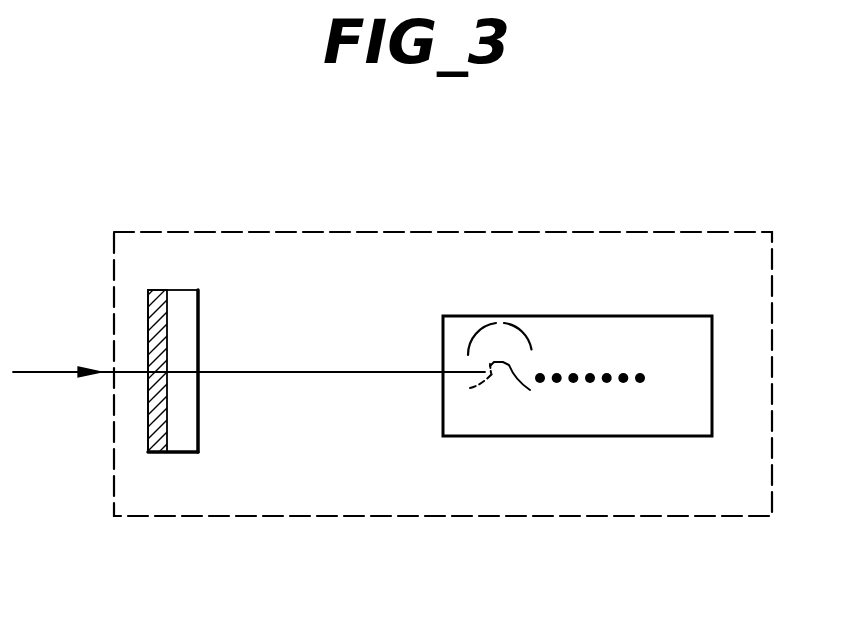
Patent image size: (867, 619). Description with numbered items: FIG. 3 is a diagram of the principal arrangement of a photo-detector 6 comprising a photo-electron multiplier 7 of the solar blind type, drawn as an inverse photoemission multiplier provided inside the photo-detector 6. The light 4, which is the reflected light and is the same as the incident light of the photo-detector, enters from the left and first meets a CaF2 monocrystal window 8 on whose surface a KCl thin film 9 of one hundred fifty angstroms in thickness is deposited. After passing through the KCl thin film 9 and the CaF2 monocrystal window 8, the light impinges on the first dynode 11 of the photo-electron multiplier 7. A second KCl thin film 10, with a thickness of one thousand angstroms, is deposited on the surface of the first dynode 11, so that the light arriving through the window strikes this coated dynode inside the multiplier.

The reflected light 4 is at (40, 372).
The photo-detector 6 is at (483, 232).
The photo-electron multiplier 7 is at (712, 372).
The CaF2 monocrystal window 8 is at (183, 455).
The KCl thin film 9 is at (151, 455).
The KCl thin film 10 is at (472, 433).
The first dynode 11 is at (525, 433).